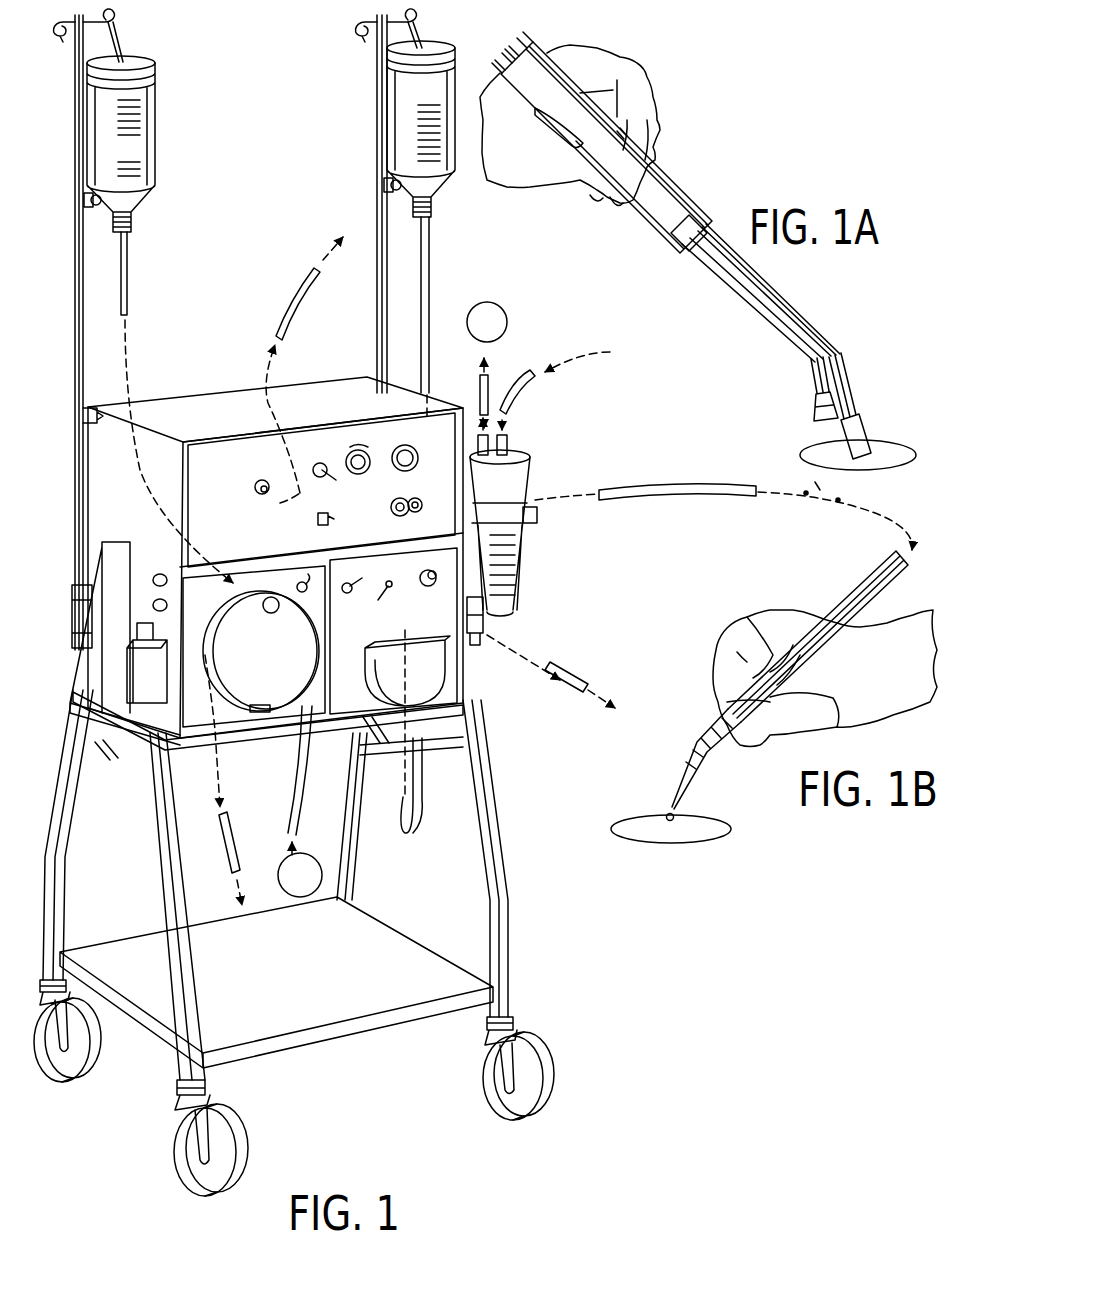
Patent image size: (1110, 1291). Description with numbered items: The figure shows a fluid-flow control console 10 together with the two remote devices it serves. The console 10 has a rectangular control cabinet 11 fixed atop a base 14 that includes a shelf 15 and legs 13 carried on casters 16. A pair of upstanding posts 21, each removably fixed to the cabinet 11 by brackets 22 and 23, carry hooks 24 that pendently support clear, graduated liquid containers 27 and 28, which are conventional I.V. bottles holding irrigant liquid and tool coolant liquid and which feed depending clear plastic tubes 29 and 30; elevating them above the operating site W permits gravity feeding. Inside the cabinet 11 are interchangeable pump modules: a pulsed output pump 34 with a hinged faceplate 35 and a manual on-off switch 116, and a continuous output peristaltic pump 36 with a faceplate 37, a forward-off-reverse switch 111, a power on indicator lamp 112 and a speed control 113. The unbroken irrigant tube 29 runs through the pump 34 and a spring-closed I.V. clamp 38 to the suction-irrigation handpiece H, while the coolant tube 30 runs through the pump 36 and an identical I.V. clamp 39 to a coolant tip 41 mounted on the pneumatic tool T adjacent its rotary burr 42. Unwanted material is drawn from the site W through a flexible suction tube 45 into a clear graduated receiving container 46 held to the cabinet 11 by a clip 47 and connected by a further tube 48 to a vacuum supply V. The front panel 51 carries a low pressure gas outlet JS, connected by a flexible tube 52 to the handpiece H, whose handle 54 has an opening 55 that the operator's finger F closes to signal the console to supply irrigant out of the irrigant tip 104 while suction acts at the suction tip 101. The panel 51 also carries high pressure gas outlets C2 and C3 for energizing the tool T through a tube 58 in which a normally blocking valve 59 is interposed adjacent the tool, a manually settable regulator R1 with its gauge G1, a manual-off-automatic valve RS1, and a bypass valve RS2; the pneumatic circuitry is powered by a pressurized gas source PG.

In FIG. 1, the fluid-flow control console 10 is at (335, 1082).
In FIG. 1, the control cabinet 11 is at (162, 393).
In FIG. 1, the legs 13 is at (483, 782).
In FIG. 1, the base 14 is at (512, 855).
In FIG. 1, the shelf 15 is at (276, 982).
In FIG. 1, the casters 16 is at (545, 1065).
In FIG. 1, the upstanding posts 21 is at (75, 112).
In FIG. 1, the bracket 22 is at (72, 605).
In FIG. 1, the bracket 23 is at (83, 415).
In FIG. 1, the hooks 24 is at (118, 20).
In FIG. 1, the irrigant liquid container 27 is at (155, 90).
In FIG. 1, the coolant liquid container 28 is at (435, 45).
In FIG. 1, the irrigant tube 29 is at (127, 275).
In FIG. 1A, the irrigant tube 29 is at (498, 68).
In FIG. 1, the coolant tube 30 is at (430, 240).
In FIG. 1B, the coolant tube 30 is at (860, 573).
In FIG. 1, the pulsed output pump 34 is at (275, 570).
In FIG. 1, the hinged faceplate 35 is at (261, 651).
In FIG. 1, the continuous output pump 36 is at (378, 562).
In FIG. 1, the faceplate 37 is at (368, 675).
In FIG. 1, the I.V. clamp 38 is at (137, 667).
In FIG. 1, the I.V. clamp 39 is at (485, 615).
In FIG. 1B, the coolant tip 41 is at (678, 773).
In FIG. 1B, the rotary burr 42 is at (672, 822).
In FIG. 1, the suction tube 45 is at (520, 392).
In FIG. 1A, the suction tube 45 is at (506, 45).
In FIG. 1, the receiving container 46 is at (515, 572).
In FIG. 1, the clip 47 is at (537, 516).
In FIG. 1, the vacuum tube 48 is at (490, 390).
In FIG. 1, the front panel 51 is at (200, 447).
In FIG. 1, the low pressure gas tube 52 is at (300, 300).
In FIG. 1A, the low pressure gas tube 52 is at (522, 32).
In FIG. 1A, the handle 54 is at (682, 198).
In FIG. 1A, the opening 55 is at (624, 135).
In FIG. 1B, the tube 58 is at (690, 488).
In FIG. 1B, the normally blocking valve 59 is at (812, 488).
In FIG. 1A, the suction tip 101 is at (801, 316).
In FIG. 1A, the irrigant tip 104 is at (818, 365).
In FIG. 1, the forward-off-reverse switch 111 is at (350, 597).
In FIG. 1, the power on indicator lamp 112 is at (380, 607).
In FIG. 1, the speed control 113 is at (428, 590).
In FIG. 1, the manual on-off switch 116 is at (297, 576).
In FIG. 1A, the finger F is at (605, 63).
In FIG. 1A, the suction-irrigation handpiece H is at (658, 240).
In FIG. 1B, the pneumatic tool T is at (797, 637).
In FIG. 1A, the operating site W is at (812, 448).
In FIG. 1B, the operating site W is at (628, 818).
In FIG. 1, the vacuum supply V is at (487, 322).
In FIG. 1, the pressurized gas source PG is at (300, 801).
In FIG. 1, the low pressure gas outlet JS is at (255, 487).
In FIG. 1, the manual-off-automatic valve RS1 is at (322, 465).
In FIG. 1, the bypass valve RS2 is at (318, 518).
In FIG. 1, the pressure regulator R1 is at (362, 476).
In FIG. 1, the outlet pressure gauge G1 is at (400, 446).
In FIG. 1, the high pressure gas outlet C2 is at (422, 507).
In FIG. 1, the high pressure gas outlet C3 is at (408, 498).